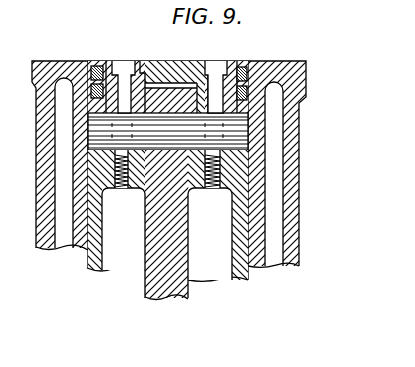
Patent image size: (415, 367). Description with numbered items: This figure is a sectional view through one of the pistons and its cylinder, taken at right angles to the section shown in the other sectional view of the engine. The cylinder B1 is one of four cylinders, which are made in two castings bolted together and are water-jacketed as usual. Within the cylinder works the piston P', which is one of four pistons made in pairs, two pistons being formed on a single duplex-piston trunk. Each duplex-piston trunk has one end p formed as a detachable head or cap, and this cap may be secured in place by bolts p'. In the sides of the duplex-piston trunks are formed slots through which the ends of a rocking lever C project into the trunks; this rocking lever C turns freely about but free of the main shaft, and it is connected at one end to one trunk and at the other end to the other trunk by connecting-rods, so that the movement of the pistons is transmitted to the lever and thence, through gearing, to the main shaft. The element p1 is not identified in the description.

The cylinder B1 is at (168, 170).
The detachable head or cap p is at (167, 155).
The spring-loaded valve p1 is at (120, 60).
The bolt p' is at (216, 109).
The piston P' is at (167, 243).
The rocking lever C is at (188, 225).